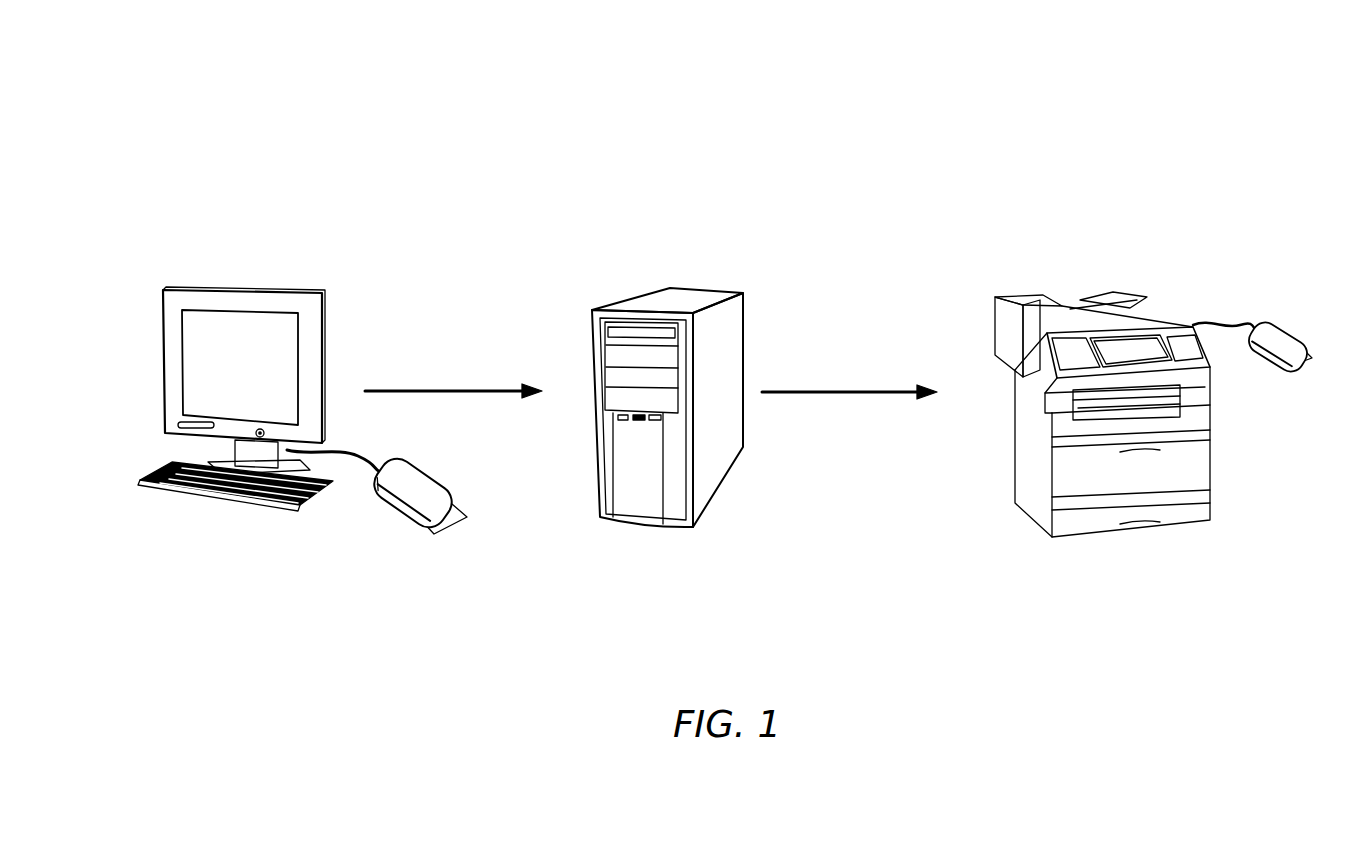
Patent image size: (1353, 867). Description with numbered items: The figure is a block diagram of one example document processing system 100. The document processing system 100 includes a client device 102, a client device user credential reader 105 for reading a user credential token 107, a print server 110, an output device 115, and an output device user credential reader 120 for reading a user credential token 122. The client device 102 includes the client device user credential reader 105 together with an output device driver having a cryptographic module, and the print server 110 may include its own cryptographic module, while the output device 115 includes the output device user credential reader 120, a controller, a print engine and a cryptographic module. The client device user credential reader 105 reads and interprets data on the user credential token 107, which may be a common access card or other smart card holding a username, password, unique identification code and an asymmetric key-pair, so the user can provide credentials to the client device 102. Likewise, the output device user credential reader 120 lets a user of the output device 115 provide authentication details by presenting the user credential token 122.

The document processing system 100 is at (405, 122).
The client device 102 is at (198, 265).
The client device user credential reader 105 is at (388, 513).
The user credential token 107 is at (447, 530).
The print server 110 is at (635, 265).
The output device 115 is at (1037, 265).
The output device user credential reader 120 is at (1278, 323).
The user credential token 122 is at (1295, 377).